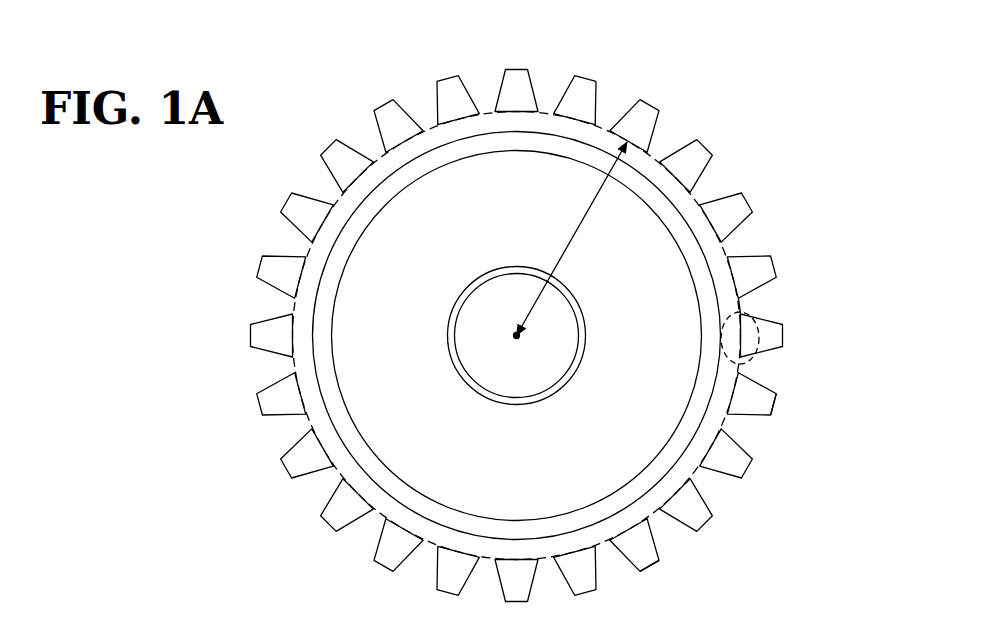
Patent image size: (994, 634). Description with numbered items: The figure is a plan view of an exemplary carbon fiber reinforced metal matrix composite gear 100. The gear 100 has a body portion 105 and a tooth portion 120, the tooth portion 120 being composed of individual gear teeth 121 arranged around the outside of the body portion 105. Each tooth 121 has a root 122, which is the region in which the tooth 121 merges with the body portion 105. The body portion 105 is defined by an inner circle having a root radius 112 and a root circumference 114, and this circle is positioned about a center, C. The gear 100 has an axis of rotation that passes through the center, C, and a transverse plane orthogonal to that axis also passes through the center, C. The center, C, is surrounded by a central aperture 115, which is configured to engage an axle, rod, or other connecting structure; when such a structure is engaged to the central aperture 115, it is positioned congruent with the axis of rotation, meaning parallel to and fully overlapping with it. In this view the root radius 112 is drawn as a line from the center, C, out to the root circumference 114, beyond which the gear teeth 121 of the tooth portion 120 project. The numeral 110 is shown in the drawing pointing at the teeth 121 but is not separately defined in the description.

The gear 100 is at (312, 70).
The body portion 105 is at (437, 140).
The gear teeth 110 is at (328, 477).
The root radius 112 is at (592, 224).
The root circumference 114 is at (680, 170).
The central aperture 115 is at (537, 373).
The tooth portion 120 is at (748, 273).
The gear tooth 121 is at (773, 403).
The root 122 is at (752, 345).
The center C is at (503, 330).